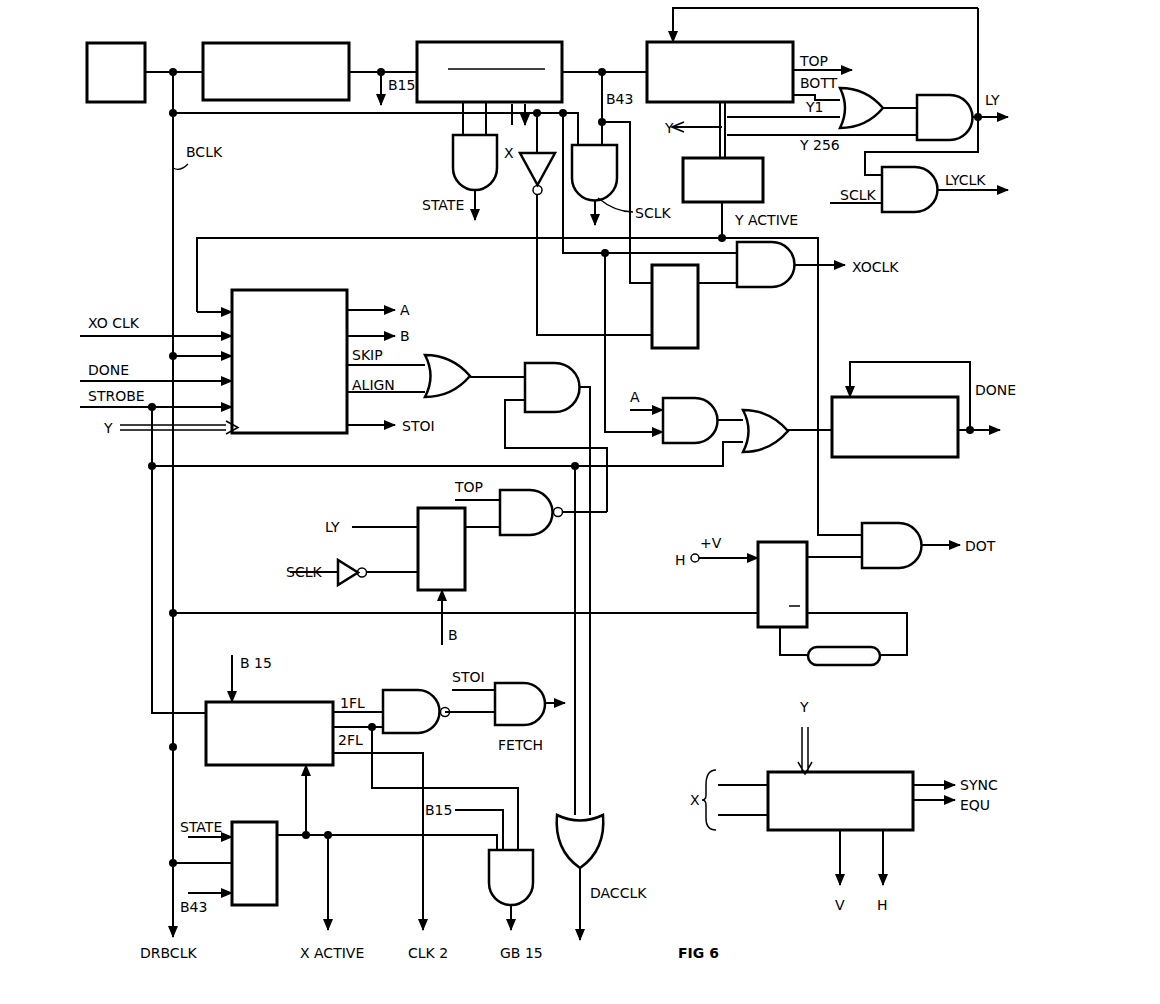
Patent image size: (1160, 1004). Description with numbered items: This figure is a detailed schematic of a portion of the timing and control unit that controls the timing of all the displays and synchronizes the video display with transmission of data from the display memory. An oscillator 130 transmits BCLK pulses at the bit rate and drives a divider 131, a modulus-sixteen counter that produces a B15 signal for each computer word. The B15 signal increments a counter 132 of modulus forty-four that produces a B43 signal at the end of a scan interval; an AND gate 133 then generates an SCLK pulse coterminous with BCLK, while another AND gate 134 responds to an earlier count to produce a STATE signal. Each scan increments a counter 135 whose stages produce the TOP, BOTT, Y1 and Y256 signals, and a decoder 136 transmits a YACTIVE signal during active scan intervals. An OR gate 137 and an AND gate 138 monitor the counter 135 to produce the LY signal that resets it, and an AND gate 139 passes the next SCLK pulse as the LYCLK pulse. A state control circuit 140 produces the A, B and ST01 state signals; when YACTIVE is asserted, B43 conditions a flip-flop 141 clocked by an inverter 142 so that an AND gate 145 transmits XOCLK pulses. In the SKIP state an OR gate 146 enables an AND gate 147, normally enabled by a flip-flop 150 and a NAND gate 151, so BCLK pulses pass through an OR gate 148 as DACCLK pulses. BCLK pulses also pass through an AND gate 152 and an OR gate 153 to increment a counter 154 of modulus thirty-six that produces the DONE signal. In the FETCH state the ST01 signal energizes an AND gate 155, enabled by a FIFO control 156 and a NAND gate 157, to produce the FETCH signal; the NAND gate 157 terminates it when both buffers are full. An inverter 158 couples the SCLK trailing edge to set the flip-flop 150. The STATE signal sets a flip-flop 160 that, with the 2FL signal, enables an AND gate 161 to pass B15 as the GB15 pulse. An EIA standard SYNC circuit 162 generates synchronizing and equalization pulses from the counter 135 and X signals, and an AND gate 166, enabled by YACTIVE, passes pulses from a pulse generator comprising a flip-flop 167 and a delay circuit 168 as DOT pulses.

The oscillator 130 is at (110, 48).
The divider 131 is at (308, 48).
The counter 132 is at (515, 48).
The AND gate 133 is at (594, 173).
The AND gate 134 is at (475, 162).
The counter 135 is at (760, 45).
The decoder 136 is at (770, 184).
The OR gate 137 is at (861, 108).
The AND gate 138 is at (945, 117).
The AND gate 139 is at (909, 189).
The state control circuit 140 is at (308, 292).
The flip-flop 141 is at (700, 322).
The inverter 142 is at (527, 180).
The AND gate 145 is at (766, 264).
The OR gate 146 is at (447, 376).
The AND gate 147 is at (552, 387).
The OR gate 148 is at (580, 841).
The flip-flop 150 is at (463, 566).
The NAND gate 151 is at (531, 512).
The AND gate 152 is at (690, 420).
The OR gate 153 is at (765, 431).
The counter 154 is at (880, 465).
The AND gate 155 is at (530, 740).
The FIFO control 156 is at (288, 702).
The NAND gate 157 is at (416, 711).
The inverter 158 is at (346, 564).
The flip-flop 160 is at (277, 896).
The AND gate 161 is at (511, 877).
The EIA standard SYNC circuit 162 is at (862, 770).
The AND gate 166 is at (892, 545).
The flip-flop 167 is at (755, 596).
The delay circuit 168 is at (845, 668).